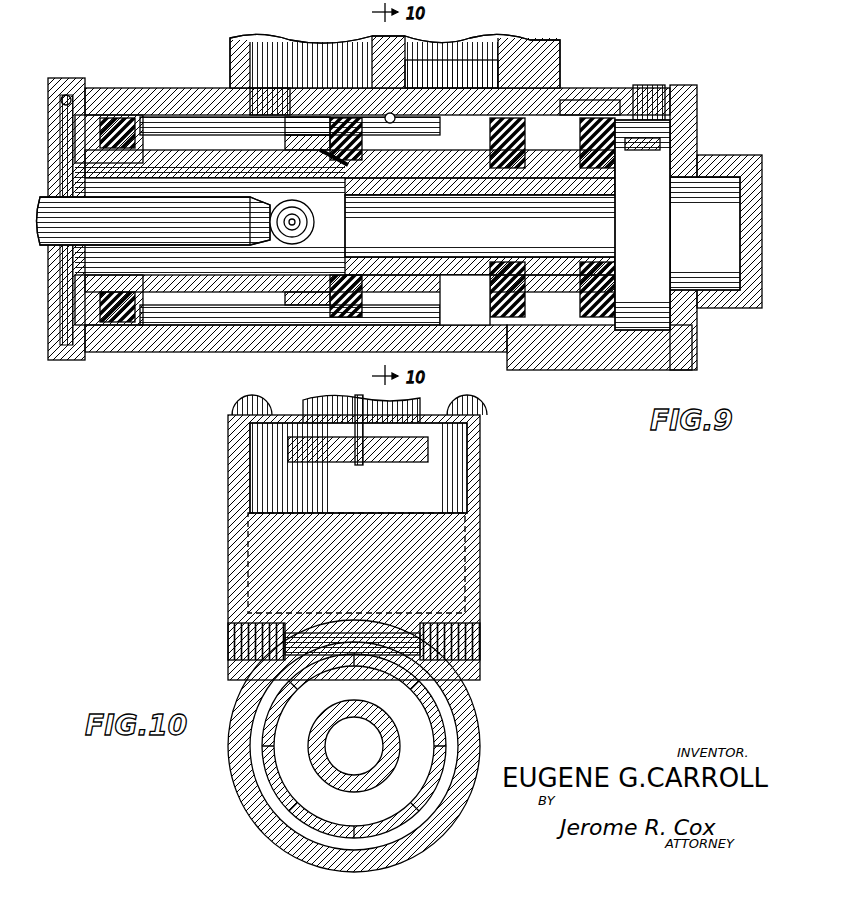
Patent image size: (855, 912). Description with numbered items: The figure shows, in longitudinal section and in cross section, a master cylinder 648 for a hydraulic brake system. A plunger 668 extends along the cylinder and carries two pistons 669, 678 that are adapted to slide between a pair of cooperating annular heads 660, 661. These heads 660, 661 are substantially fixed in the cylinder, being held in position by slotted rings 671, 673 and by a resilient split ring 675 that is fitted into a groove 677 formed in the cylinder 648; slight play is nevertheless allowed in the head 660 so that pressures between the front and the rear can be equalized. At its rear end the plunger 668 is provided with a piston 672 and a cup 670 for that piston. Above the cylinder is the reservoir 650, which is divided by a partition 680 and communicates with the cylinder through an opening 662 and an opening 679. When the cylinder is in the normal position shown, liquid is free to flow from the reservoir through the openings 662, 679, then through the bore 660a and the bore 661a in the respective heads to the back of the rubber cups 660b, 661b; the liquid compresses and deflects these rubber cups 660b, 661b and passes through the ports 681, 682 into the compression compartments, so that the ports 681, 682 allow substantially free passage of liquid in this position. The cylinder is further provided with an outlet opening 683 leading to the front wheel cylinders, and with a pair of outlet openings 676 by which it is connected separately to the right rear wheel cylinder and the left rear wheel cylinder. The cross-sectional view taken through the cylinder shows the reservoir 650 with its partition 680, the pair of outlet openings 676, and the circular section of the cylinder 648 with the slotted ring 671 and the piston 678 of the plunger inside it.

In FIG. 9, the master cylinder 648 is at (175, 340).
In FIG. 10, the master cylinder 648 is at (470, 730).
In FIG. 9, the reservoir 650 is at (555, 70).
In FIG. 10, the reservoir 650 is at (487, 473).
In FIG. 9, the annular head 660 is at (628, 342).
In FIG. 9, the bore 660a is at (600, 115).
In FIG. 9, the rubber cup 660b is at (665, 125).
In FIG. 9, the annular head 661 is at (278, 307).
In FIG. 9, the bore 661a is at (272, 115).
In FIG. 9, the rubber cup 661b is at (290, 221).
In FIG. 9, the opening 662 is at (575, 96).
In FIG. 9, the plunger 668 is at (235, 290).
In FIG. 9, the piston 669 is at (345, 330).
In FIG. 9, the cup 670 is at (118, 325).
In FIG. 9, the slotted ring 671 is at (498, 118).
In FIG. 10, the slotted ring 671 is at (307, 746).
In FIG. 9, the piston 672 is at (88, 313).
In FIG. 9, the slotted ring 673 is at (660, 310).
In FIG. 9, the resilient split ring 675 is at (300, 340).
In FIG. 9, the outlet opening 676 is at (395, 117).
In FIG. 10, the outlet opening 676 is at (232, 640).
In FIG. 9, the groove 677 is at (300, 115).
In FIG. 9, the piston 678 is at (440, 275).
In FIG. 10, the piston 678 is at (310, 765).
In FIG. 9, the opening 679 is at (268, 115).
In FIG. 9, the partition 680 is at (395, 62).
In FIG. 10, the partition 680 is at (450, 560).
In FIG. 9, the port 681 is at (580, 195).
In FIG. 9, the port 682 is at (335, 150).
In FIG. 9, the outlet opening 683 is at (660, 98).